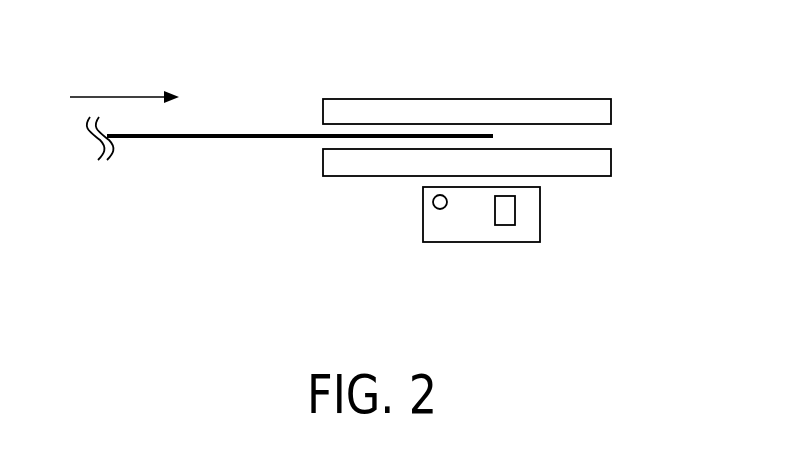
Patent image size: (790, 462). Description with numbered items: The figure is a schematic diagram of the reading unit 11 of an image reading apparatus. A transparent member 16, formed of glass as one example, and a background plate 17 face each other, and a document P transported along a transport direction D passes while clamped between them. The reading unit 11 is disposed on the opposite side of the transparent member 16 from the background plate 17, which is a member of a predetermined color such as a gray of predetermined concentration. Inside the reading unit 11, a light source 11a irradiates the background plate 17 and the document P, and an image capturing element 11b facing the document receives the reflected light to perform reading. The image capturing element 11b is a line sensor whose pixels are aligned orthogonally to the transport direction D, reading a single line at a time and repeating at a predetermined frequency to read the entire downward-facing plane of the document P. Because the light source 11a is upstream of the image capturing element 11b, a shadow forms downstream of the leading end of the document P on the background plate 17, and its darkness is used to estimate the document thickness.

The reading unit 11 is at (525, 243).
The light source 11a is at (432, 198).
The image capturing element 11b is at (502, 225).
The transparent member 16 is at (590, 177).
The background plate 17 is at (420, 98).
The document P is at (215, 138).
The transport direction D is at (124, 84).